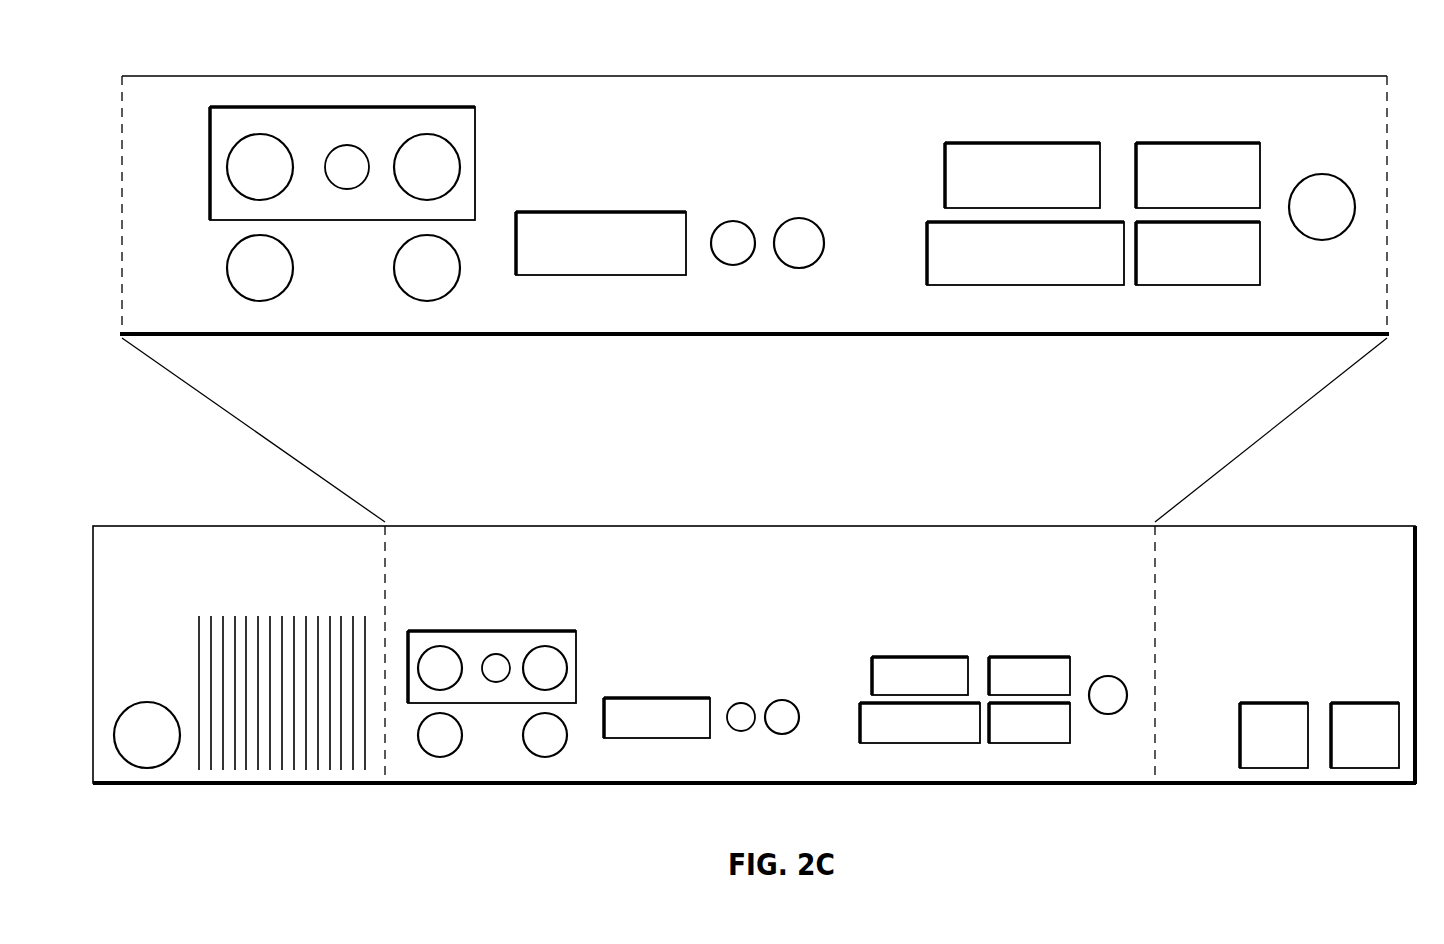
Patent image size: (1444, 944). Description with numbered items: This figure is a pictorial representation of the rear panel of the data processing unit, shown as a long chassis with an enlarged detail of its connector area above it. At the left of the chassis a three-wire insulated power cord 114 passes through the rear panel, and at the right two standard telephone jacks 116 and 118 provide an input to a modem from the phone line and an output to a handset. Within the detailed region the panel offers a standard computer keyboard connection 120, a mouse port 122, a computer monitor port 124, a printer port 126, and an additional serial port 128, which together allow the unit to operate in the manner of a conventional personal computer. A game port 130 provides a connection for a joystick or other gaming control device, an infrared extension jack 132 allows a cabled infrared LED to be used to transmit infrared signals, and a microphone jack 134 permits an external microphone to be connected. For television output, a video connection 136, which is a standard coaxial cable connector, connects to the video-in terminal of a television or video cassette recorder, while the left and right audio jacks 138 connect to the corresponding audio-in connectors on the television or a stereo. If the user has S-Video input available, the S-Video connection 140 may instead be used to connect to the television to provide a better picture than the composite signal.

The power cord 114 is at (150, 768).
The telephone jack 116 is at (1270, 703).
The telephone jack 118 is at (1355, 703).
The computer keyboard connection 120 is at (1355, 209).
The mouse port 122 is at (1200, 143).
The computer monitor port 124 is at (1047, 143).
The printer port 126 is at (935, 285).
The serial port 128 is at (1263, 250).
The game port 130 is at (588, 212).
The infrared extension jack 132 is at (740, 221).
The microphone jack 134 is at (805, 219).
The video connection 136 is at (460, 166).
The left and right audio jacks 138 is at (228, 170).
The S-Video connection 140 is at (433, 300).